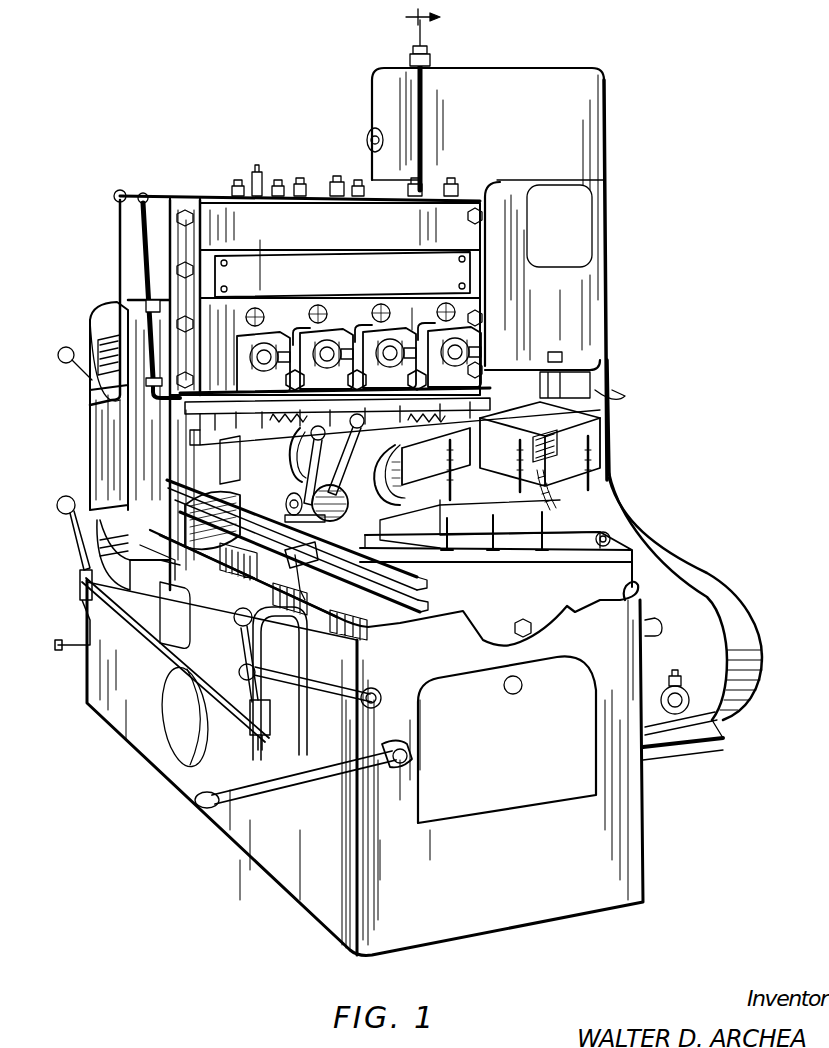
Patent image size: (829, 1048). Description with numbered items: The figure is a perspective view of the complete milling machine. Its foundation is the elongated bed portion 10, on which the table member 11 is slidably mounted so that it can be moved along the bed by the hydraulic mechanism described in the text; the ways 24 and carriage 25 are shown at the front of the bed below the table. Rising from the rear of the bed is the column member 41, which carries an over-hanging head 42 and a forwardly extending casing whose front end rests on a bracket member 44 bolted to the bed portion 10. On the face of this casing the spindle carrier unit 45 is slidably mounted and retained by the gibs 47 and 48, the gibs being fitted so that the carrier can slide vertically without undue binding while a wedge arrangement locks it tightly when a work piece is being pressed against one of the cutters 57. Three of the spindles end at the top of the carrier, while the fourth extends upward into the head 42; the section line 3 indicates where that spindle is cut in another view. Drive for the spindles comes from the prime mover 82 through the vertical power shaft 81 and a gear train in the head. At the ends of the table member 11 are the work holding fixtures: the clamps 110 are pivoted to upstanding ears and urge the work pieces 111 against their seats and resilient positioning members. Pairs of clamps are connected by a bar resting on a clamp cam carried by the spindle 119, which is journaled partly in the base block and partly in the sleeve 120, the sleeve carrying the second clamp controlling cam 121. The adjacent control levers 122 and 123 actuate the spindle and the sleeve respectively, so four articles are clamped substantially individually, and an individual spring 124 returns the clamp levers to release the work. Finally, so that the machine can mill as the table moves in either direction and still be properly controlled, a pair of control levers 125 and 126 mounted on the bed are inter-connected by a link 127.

The section line 3 is at (432, 98).
The bed portion 10 is at (556, 914).
The table member 11 is at (620, 565).
The guide ways 24 is at (302, 556).
The carriage 25 is at (318, 570).
The column member 41 is at (575, 300).
The overhanging head 42 is at (490, 52).
The bracket member 44 is at (92, 410).
The spindle carrier unit 45 is at (330, 210).
The gib 47 is at (188, 242).
The gib 48 is at (512, 192).
The cutter 57 is at (351, 424).
The vertical power shaft 81 is at (572, 392).
The prime mover 82 is at (740, 628).
The clamp 110 is at (612, 410).
The work piece 111 is at (265, 430).
The spindle 119 is at (290, 502).
The sleeve 120 is at (334, 521).
The second clamp controlling cam 121 is at (452, 518).
The control lever 122 is at (296, 454).
The control lever 123 is at (375, 496).
The spring 124 is at (570, 460).
The control lever 125 is at (230, 636).
The control lever 126 is at (60, 508).
The link 127 is at (164, 645).